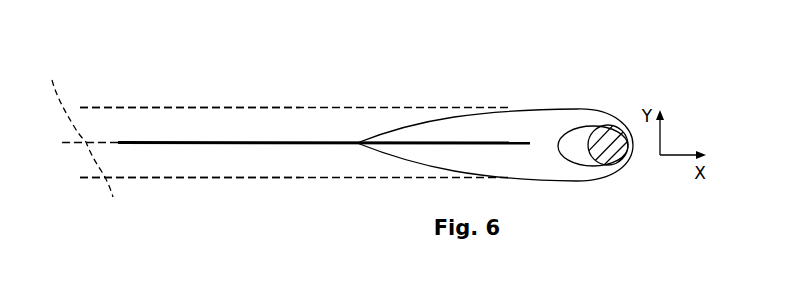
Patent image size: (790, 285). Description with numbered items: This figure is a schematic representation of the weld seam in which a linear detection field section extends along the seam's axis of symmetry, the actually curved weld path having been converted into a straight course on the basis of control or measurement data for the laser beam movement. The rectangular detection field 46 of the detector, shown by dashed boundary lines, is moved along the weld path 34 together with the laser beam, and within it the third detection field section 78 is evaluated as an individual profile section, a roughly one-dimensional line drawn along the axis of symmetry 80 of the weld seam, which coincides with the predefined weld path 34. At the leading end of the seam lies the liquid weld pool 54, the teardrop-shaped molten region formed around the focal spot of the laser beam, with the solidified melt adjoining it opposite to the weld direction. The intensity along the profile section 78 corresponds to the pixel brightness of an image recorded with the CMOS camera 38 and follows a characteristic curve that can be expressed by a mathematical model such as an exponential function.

The weld path 34 is at (190, 201).
The CMOS camera 38 is at (162, 122).
The detection field 46 is at (273, 107).
The liquid weld pool 54 is at (555, 118).
The third detection field section 78 is at (210, 141).
The axis of symmetry 80 is at (77, 129).